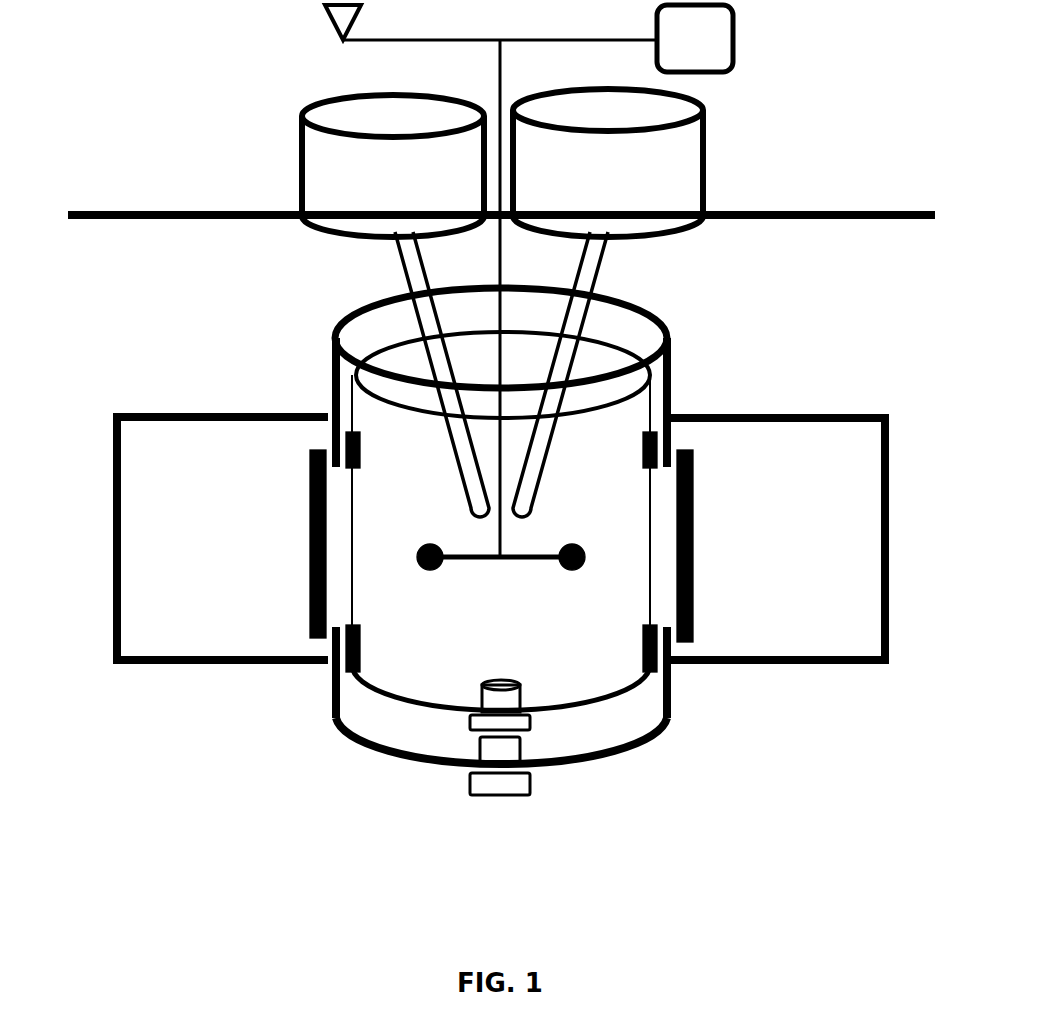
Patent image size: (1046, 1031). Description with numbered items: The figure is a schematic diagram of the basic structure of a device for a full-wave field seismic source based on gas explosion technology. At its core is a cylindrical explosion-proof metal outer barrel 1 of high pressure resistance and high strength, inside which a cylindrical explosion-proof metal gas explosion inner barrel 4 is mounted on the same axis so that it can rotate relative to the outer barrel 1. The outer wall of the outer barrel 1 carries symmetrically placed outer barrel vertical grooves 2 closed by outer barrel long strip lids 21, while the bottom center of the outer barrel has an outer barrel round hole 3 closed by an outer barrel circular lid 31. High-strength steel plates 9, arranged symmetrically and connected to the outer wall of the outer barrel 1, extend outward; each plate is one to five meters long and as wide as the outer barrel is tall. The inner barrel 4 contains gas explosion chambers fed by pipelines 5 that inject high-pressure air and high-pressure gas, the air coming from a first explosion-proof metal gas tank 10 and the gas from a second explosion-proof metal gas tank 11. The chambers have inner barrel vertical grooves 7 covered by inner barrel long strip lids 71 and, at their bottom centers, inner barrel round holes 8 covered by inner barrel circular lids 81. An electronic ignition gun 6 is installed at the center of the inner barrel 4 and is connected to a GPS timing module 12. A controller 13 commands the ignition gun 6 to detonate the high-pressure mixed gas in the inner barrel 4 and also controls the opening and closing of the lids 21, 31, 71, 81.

The explosion-proof metal outer barrel 1 is at (340, 368).
The outer barrel vertical grooves 2 is at (335, 575).
The outer barrel long strip lids 21 is at (310, 538).
The outer barrel round hole 3 is at (482, 750).
The outer barrel circular lid 31 is at (530, 783).
The explosion-proof metal gas explosion inner barrel 4 is at (647, 398).
The pipelines 5 is at (415, 282).
The electronic ignition gun 6 is at (440, 570).
The inner barrel vertical grooves 7 is at (640, 568).
The inner barrel long strip lids 71 is at (655, 522).
The inner barrel round holes 8 is at (480, 693).
The inner barrel circular lids 81 is at (543, 702).
The high-strength steel plates 9 is at (113, 538).
The first explosion-proof metal gas tank 10 is at (387, 165).
The second explosion-proof metal gas tank 11 is at (608, 163).
The GPS timing module 12 is at (327, 18).
The controller 13 is at (693, 39).